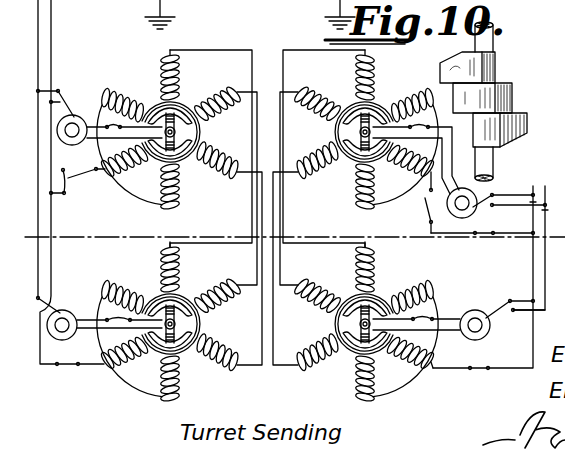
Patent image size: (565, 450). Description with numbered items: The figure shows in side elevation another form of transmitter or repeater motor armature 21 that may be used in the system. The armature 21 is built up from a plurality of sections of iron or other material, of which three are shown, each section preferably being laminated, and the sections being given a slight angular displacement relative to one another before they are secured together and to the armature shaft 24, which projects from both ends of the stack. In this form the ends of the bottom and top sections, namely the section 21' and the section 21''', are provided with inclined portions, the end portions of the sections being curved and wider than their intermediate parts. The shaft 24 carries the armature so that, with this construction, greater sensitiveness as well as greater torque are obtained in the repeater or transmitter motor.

The armature shaft 24 is at (494, 30).
The armature 21 is at (498, 164).
The armature section 21' is at (488, 67).
The armature section 21''' is at (519, 130).